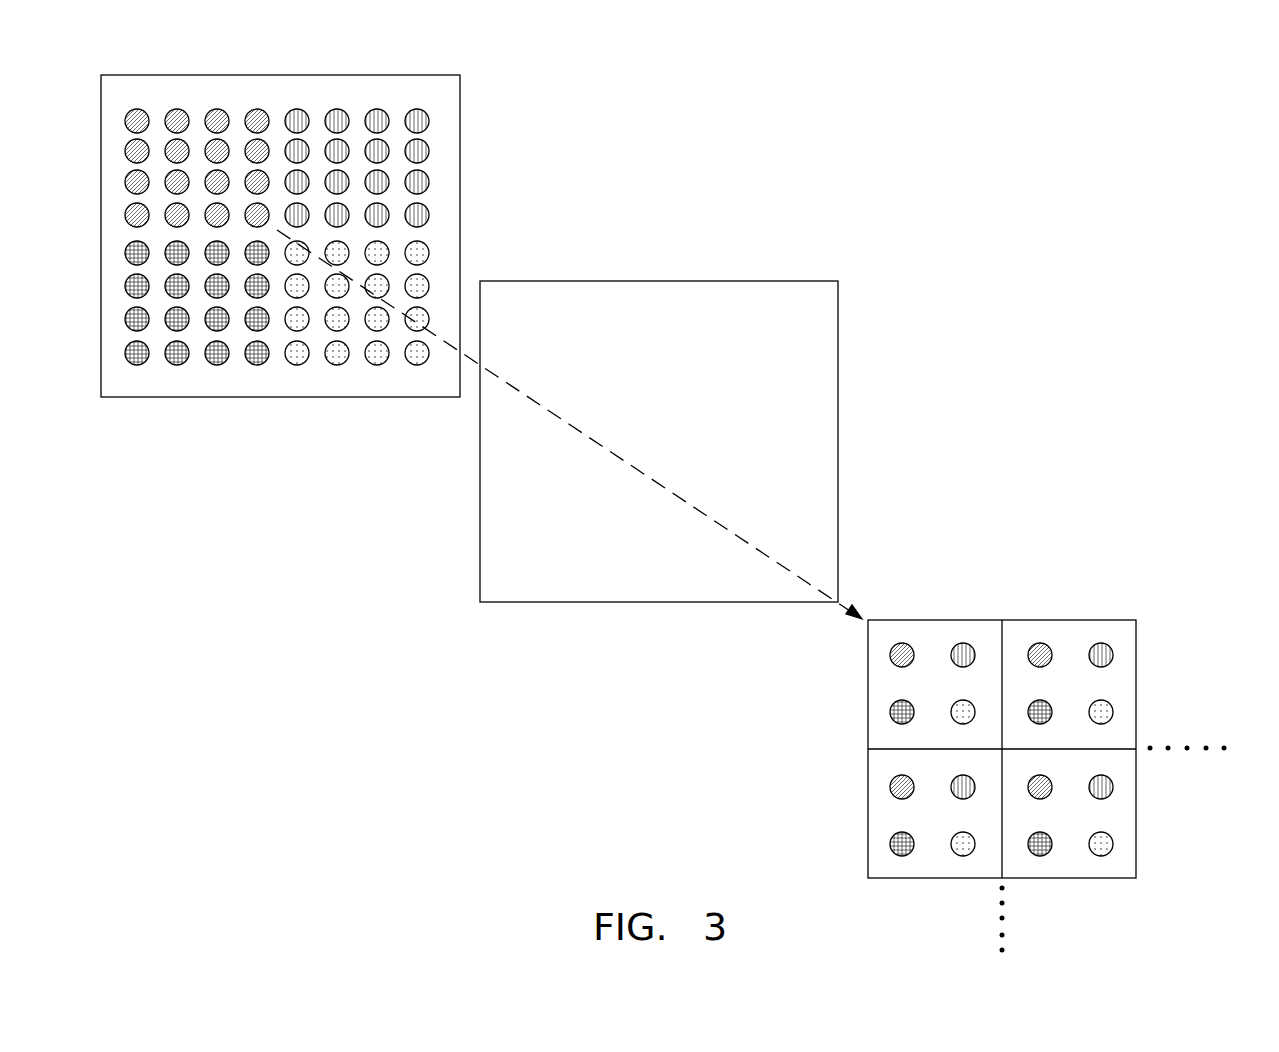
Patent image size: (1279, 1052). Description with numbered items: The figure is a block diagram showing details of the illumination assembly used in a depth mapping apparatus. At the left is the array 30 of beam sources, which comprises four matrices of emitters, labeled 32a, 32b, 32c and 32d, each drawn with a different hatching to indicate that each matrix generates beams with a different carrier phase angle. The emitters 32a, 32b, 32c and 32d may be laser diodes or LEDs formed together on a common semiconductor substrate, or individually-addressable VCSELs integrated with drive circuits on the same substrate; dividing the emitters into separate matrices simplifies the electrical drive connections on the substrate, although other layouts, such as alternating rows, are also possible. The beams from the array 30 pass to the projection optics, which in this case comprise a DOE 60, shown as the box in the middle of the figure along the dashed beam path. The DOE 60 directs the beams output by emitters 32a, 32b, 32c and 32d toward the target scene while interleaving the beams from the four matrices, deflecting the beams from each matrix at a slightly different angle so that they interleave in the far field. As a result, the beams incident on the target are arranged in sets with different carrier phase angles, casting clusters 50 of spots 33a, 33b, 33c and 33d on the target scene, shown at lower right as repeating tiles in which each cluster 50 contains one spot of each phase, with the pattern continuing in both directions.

The array of beam sources 30 is at (416, 75).
The matrix of emitters 32a is at (252, 116).
The matrix of emitters 32b is at (423, 212).
The matrix of emitters 32c is at (255, 360).
The matrix of emitters 32d is at (415, 360).
The DOE 60 is at (805, 281).
The cluster of spots 50 is at (997, 756).
The spot 33a is at (1042, 645).
The spot 33b is at (1103, 645).
The spot 33c is at (1040, 704).
The spot 33d is at (1103, 704).